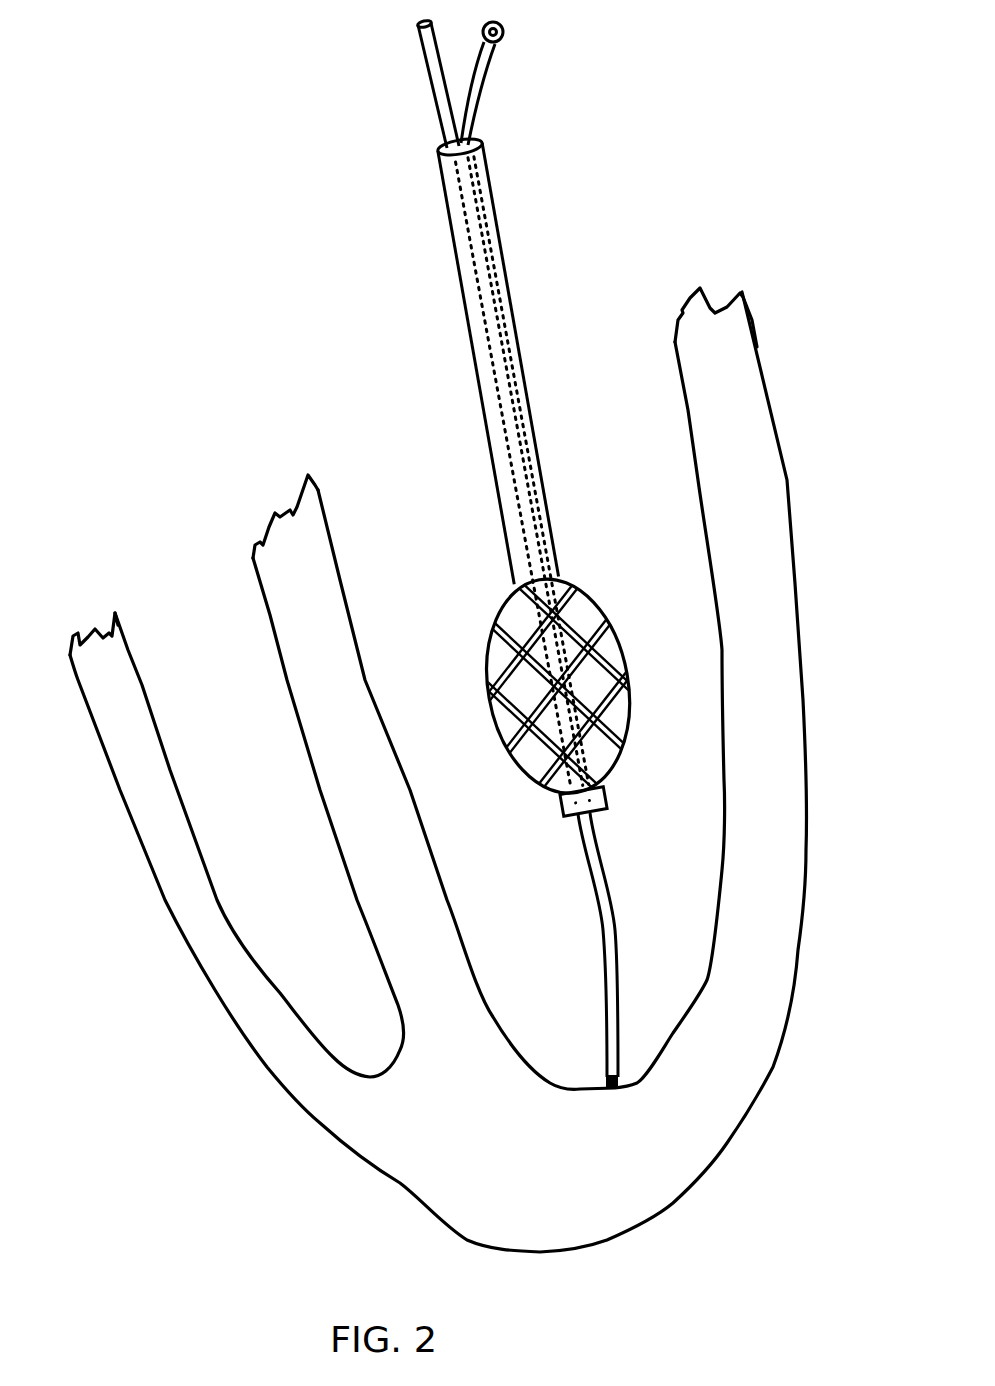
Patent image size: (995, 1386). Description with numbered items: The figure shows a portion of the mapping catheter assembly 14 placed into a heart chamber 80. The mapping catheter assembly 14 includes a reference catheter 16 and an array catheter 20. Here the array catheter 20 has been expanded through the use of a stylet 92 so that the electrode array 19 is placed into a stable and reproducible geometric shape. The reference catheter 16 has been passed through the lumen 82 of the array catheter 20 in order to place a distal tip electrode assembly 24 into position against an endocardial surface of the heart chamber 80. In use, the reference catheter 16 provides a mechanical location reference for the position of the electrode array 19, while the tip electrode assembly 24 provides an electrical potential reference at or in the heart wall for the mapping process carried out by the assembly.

The mapping catheter assembly 14 is at (438, 770).
The reference catheter 16 is at (705, 1008).
The electrode array 19 is at (472, 687).
The array catheter 20 is at (552, 611).
The distal tip electrode assembly 24 is at (610, 1090).
The heart chamber 80 is at (510, 970).
The lumen 82 is at (440, 147).
The stylet 92 is at (482, 65).